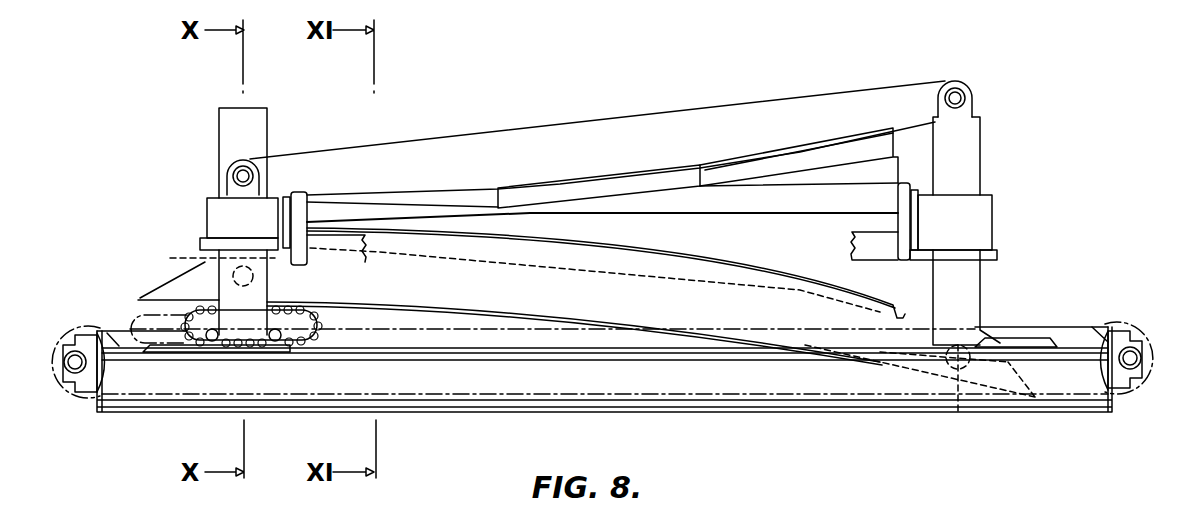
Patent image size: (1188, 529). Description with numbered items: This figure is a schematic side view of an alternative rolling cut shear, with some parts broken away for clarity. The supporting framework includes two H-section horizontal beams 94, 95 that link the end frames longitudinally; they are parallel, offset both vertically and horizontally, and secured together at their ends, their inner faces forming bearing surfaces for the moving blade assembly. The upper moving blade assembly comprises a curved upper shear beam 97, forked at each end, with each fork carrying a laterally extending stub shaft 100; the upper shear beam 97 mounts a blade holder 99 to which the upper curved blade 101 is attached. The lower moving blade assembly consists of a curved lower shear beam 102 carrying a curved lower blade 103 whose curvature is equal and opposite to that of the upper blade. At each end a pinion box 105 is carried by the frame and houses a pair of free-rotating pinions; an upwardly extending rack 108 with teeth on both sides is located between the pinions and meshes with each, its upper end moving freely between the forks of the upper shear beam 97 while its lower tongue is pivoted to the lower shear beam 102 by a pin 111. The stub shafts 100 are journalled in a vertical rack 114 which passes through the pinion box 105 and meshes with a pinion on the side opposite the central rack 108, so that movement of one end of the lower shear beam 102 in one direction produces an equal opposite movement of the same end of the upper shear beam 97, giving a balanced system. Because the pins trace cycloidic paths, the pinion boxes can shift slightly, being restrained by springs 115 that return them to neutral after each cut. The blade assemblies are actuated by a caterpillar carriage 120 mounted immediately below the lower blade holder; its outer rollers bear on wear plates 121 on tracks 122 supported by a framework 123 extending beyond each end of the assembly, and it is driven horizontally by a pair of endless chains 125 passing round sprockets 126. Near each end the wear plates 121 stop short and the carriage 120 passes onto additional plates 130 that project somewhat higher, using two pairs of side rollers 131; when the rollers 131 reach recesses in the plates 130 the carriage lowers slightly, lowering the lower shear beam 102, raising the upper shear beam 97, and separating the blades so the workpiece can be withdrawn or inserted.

The horizontal beam 94 is at (853, 187).
The horizontal beam 95 is at (850, 240).
The upper shear beam 97 is at (522, 143).
The blade holder 99 is at (575, 178).
The stub shaft 100 is at (237, 172).
The upper curved blade 101 is at (640, 185).
The lower shear beam 102 is at (538, 300).
The lower blade 103 is at (665, 253).
The pinion box 105 is at (222, 214).
The rack 108 is at (250, 133).
The pin 111 is at (583, 343).
The rack 114 is at (227, 190).
The spring 115 is at (293, 200).
The caterpillar carriage 120 is at (297, 320).
The wear plate 121 is at (660, 348).
The track 122 is at (481, 357).
The framework 123 is at (592, 375).
The endless chain 125 is at (128, 327).
The sprocket 126 is at (70, 330).
The additional plate 130 is at (187, 347).
The side roller 131 is at (213, 340).